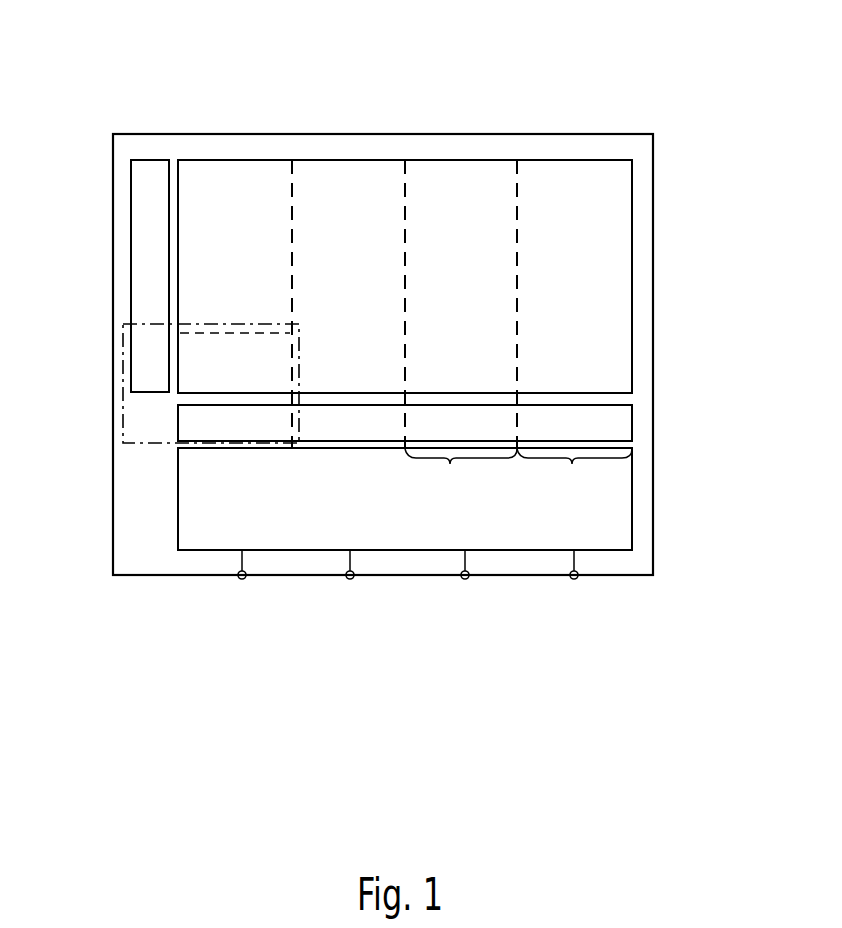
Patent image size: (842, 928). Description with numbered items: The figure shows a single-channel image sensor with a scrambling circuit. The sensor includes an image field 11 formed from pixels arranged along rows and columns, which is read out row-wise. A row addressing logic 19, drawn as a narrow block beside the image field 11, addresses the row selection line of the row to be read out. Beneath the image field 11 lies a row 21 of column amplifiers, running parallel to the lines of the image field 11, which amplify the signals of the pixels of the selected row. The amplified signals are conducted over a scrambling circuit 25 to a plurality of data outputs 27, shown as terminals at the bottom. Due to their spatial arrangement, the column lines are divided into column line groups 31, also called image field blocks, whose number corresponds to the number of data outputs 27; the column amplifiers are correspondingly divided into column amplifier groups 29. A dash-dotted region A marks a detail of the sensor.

The image field 11 is at (632, 296).
The row addressing logic 19 is at (145, 160).
The row of column amplifiers 21 is at (632, 430).
The scrambling circuit 25 is at (632, 517).
The data outputs 27 is at (466, 581).
The column amplifier groups 29 is at (450, 466).
The column line groups 31 is at (471, 289).
The detail region A is at (122, 340).